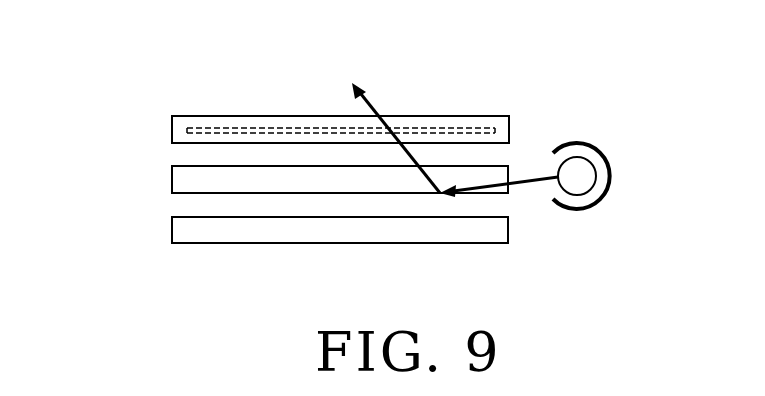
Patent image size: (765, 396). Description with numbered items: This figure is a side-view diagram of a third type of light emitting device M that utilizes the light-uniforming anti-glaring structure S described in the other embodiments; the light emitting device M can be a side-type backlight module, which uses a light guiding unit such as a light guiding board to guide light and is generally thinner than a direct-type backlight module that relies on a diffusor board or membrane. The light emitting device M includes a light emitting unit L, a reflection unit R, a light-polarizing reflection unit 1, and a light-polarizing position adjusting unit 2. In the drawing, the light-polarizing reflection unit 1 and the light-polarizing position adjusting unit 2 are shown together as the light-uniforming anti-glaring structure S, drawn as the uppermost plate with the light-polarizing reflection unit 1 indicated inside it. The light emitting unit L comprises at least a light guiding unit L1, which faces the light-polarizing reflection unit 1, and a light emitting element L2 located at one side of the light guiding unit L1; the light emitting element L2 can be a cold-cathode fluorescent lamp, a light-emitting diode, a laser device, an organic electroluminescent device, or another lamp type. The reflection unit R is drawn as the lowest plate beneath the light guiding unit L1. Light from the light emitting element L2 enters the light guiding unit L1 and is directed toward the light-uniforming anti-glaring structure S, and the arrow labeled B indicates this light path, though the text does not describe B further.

The light emitting device M is at (182, 53).
The light-uniforming anti-glaring structure S is at (394, 107).
The light-polarizing reflection unit 1 is at (478, 129).
The light-polarizing position adjusting unit 2 is at (509, 130).
The light guiding unit L1 is at (502, 193).
The light emitting element L2 is at (583, 195).
The light emitting unit L is at (580, 262).
The reflection unit R is at (152, 229).
The light beam B is at (455, 140).